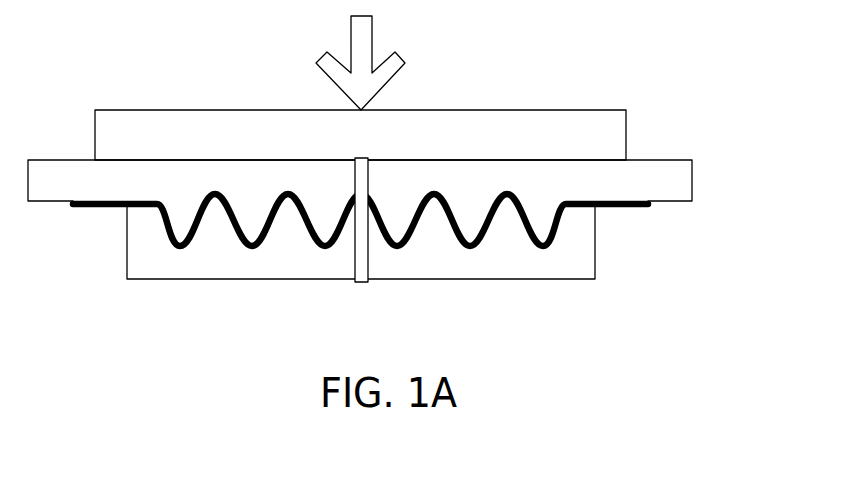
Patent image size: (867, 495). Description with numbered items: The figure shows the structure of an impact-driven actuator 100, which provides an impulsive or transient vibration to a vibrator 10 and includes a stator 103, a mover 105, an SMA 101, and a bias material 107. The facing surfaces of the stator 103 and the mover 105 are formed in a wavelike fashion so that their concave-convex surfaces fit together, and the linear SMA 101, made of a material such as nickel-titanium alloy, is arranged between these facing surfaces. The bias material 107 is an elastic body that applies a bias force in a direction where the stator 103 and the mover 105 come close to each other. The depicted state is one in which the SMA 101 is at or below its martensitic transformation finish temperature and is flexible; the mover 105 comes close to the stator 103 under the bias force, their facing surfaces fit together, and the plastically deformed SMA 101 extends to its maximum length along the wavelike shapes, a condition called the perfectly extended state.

The impact-driven actuator 100 is at (382, 200).
The vibrator 10 is at (415, 125).
The SMA 101 is at (638, 207).
The stator 103 is at (583, 255).
The mover 105 is at (515, 178).
The bias material 107 is at (362, 285).